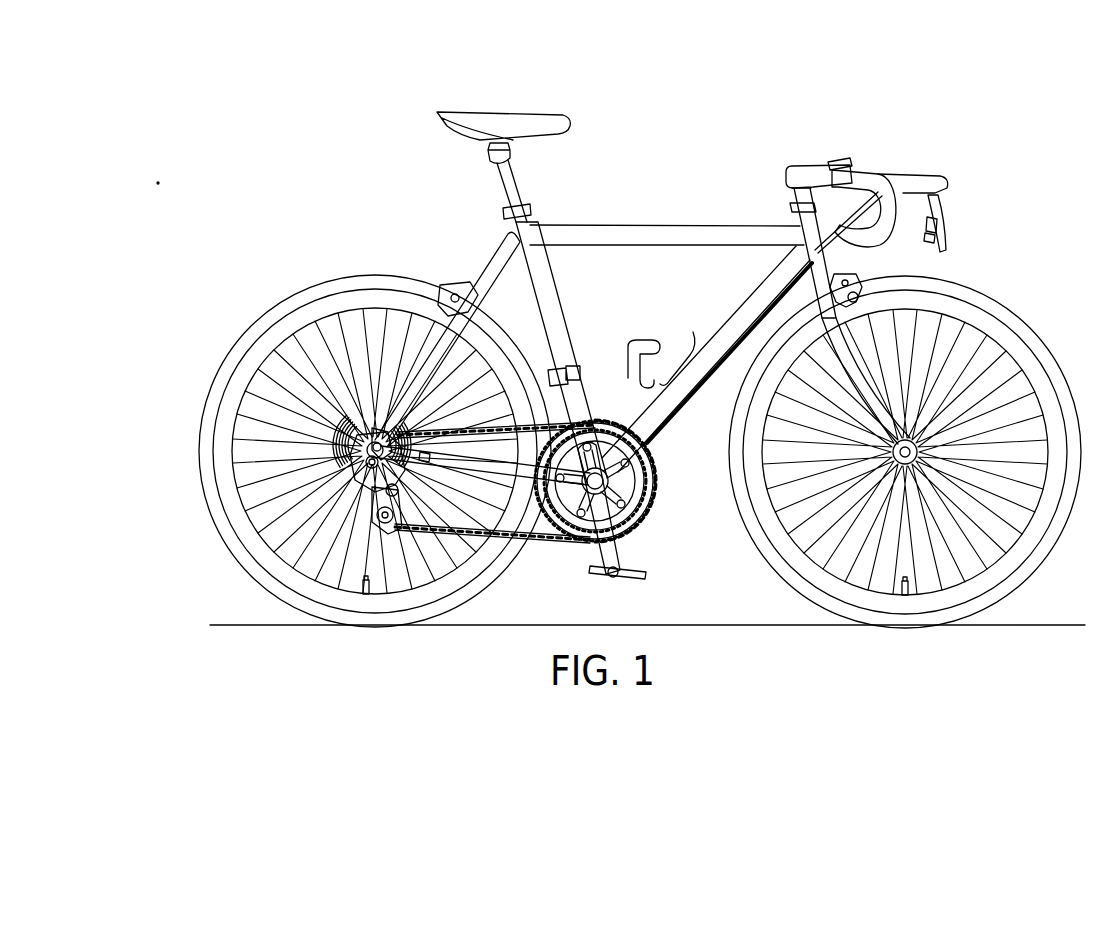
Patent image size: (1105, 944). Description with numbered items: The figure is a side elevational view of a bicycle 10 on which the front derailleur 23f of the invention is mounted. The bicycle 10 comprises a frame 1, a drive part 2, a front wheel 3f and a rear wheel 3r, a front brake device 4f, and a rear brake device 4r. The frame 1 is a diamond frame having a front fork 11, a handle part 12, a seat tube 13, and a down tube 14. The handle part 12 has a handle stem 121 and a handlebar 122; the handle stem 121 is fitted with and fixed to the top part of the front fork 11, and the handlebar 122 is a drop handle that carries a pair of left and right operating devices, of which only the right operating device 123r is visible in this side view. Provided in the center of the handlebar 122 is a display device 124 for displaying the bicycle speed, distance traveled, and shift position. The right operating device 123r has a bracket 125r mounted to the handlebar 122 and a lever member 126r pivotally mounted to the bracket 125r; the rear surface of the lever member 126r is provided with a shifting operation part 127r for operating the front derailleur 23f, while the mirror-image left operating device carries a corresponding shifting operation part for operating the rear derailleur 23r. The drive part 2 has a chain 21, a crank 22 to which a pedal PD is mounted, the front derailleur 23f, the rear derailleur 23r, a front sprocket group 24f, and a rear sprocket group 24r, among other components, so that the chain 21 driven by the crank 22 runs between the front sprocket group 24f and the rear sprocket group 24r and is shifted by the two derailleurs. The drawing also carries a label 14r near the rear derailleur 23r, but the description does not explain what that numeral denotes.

The bicycle 10 is at (714, 130).
The frame 1 is at (631, 221).
The seat tube 13 is at (547, 300).
The down tube 14 is at (728, 308).
The handle part 12 is at (810, 158).
The handle stem 121 is at (790, 172).
The display device 124 is at (853, 162).
The handlebar 122 is at (910, 182).
The right operating device 123r is at (931, 176).
The bracket 125r is at (941, 188).
The shifting operation part 127r is at (938, 216).
The lever member 126r is at (937, 236).
The front fork 11 is at (941, 306).
The front wheel 3f is at (1012, 307).
The rear wheel 3r is at (353, 283).
The front brake device 4f is at (797, 242).
The rear brake device 4r is at (453, 287).
The front derailleur 23f is at (560, 366).
The rear derailleur 23r is at (352, 490).
The rear derailleur chain cage 14r is at (403, 528).
The front sprocket group 24f is at (644, 457).
The rear sprocket group 24r is at (345, 388).
The drive part 2 is at (663, 512).
The chain 21 is at (533, 541).
The crank 22 is at (628, 541).
The pedal PD is at (631, 576).